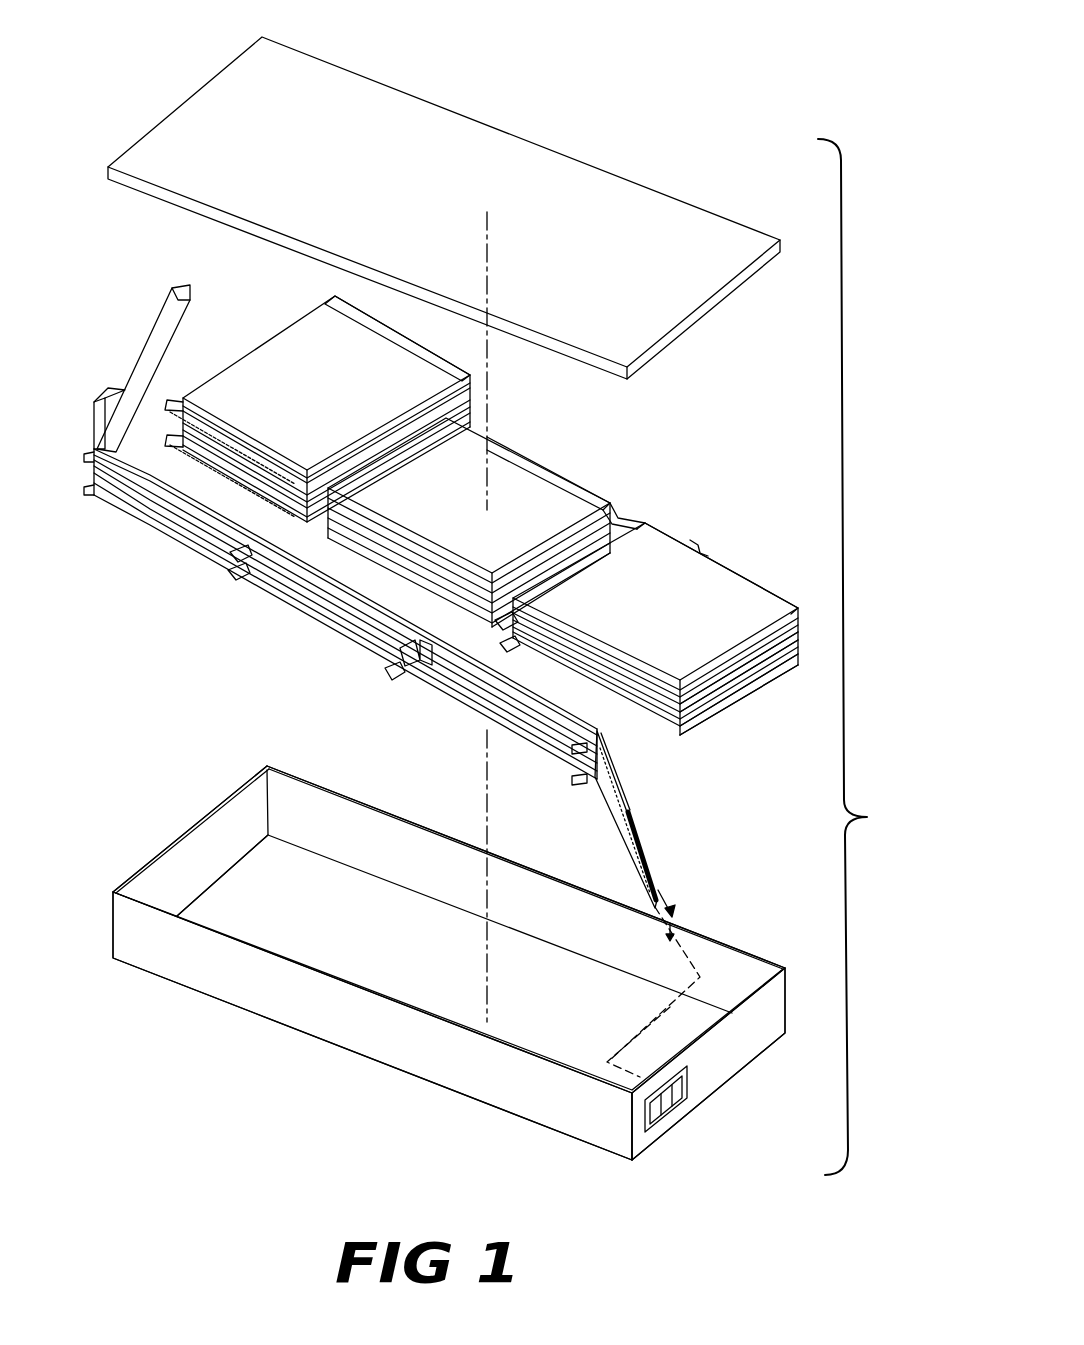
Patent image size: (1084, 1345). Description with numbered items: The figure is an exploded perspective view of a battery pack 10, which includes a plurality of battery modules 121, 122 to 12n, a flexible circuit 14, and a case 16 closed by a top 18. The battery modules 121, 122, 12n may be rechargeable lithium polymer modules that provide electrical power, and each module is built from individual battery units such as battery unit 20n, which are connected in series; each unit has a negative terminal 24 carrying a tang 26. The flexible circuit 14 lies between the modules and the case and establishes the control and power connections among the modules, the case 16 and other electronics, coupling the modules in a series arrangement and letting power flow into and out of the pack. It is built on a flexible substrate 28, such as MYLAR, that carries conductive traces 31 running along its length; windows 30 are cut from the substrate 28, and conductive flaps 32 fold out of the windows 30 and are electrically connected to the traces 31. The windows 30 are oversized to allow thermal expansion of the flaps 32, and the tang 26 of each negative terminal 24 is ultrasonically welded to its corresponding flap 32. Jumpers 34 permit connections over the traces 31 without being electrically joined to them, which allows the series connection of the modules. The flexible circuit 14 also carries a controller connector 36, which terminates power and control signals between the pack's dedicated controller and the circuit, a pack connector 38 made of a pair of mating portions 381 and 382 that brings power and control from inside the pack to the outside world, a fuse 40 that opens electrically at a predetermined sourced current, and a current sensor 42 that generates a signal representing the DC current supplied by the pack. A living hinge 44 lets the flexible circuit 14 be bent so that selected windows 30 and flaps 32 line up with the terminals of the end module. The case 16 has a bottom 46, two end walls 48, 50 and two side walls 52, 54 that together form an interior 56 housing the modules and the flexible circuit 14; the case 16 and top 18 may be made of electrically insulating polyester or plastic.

The battery pack 10 is at (651, 176).
The top 18 is at (533, 178).
The battery module 121 is at (273, 380).
The battery module 122 is at (515, 496).
The battery module 12n is at (700, 590).
The battery unit 20n is at (690, 720).
The negative terminal 24 is at (627, 523).
The flexible circuit 14 is at (154, 347).
The controller connector 36 is at (103, 400).
The living hinge 44 is at (85, 477).
The substrate 28 is at (168, 512).
The conductive traces 31 is at (310, 608).
The windows 30 is at (237, 560).
The flaps 32 is at (230, 577).
The jumpers 34 is at (390, 675).
The tang 26 is at (505, 630).
The fuse 40 is at (604, 790).
The current sensor 42 is at (632, 818).
The case 16 is at (265, 1024).
The end wall 48 is at (213, 807).
The bottom 46 is at (263, 893).
The side wall 52 is at (337, 823).
The end wall 50 is at (705, 1067).
The side wall 54 is at (320, 1008).
The interior 56 is at (450, 1005).
The pack connector 38 is at (712, 925).
The mating portion 381 is at (662, 878).
The mating portion 382 is at (672, 1110).